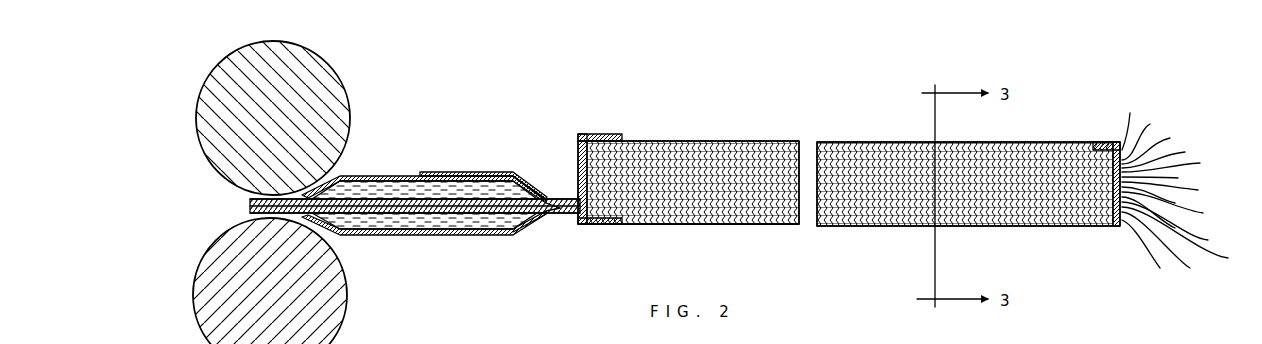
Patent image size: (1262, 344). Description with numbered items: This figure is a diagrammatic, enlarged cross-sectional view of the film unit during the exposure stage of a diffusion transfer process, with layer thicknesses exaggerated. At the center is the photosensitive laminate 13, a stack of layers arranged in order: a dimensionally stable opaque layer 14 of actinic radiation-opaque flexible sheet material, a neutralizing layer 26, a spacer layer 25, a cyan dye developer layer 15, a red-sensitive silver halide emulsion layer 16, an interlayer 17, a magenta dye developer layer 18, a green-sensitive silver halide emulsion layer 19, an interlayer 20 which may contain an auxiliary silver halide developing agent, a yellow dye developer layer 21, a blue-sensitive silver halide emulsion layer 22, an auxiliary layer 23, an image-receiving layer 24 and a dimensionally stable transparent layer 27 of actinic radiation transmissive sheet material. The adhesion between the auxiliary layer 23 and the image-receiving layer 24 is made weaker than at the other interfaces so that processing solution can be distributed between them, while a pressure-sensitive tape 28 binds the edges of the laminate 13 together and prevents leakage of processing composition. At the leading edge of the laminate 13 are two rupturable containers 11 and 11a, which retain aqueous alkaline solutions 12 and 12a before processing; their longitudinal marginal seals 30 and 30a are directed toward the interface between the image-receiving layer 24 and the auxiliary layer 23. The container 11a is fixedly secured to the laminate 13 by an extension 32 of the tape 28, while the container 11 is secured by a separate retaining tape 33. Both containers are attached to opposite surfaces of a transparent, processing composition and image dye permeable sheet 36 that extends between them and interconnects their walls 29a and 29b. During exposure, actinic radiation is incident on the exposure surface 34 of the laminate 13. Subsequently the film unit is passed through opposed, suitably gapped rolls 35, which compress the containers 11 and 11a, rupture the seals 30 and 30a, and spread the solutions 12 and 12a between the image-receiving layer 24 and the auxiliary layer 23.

The opposed suitably gapped rolls 35 is at (328, 78).
The rupturable container 11 is at (358, 177).
The rupturable container 11a is at (395, 238).
The aqueous alkaline solution 12 is at (402, 187).
The aqueous alkaline solution 12a is at (412, 226).
The wall 29a is at (441, 200).
The wall 29b is at (433, 213).
The retaining tape 33 is at (515, 174).
The longitudinal marginal seal 30 is at (560, 197).
The longitudinal marginal seal 30a is at (561, 221).
The extension of tape 32 is at (531, 238).
The pressure-sensitive tape 28 is at (594, 224).
The photosensitive laminate 13 is at (712, 138).
The exposure surface 34 is at (749, 225).
The dimensionally stable opaque layer 14 is at (1119, 142).
The neutralizing layer 26 is at (1130, 123).
The spacer layer 25 is at (1147, 135).
The cyan dye developer layer 15 is at (1155, 145).
The red-sensitive silver halide emulsion layer 16 is at (1162, 155).
The interlayer 17 is at (1171, 164).
The magenta dye developer layer 18 is at (1160, 178).
The green-sensitive silver halide emulsion layer 19 is at (1170, 191).
The interlayer 20 is at (1158, 200).
The yellow dye developer layer 21 is at (1172, 207).
The blue-sensitive silver halide emulsion layer 22 is at (1158, 217).
The auxiliary layer 23 is at (1175, 226).
The transparent, processing composition and image dye permeable sheet 36 is at (1185, 237).
The image-receiving layer 24 is at (1166, 247).
The dimensionally stable transparent layer 27 is at (1146, 253).